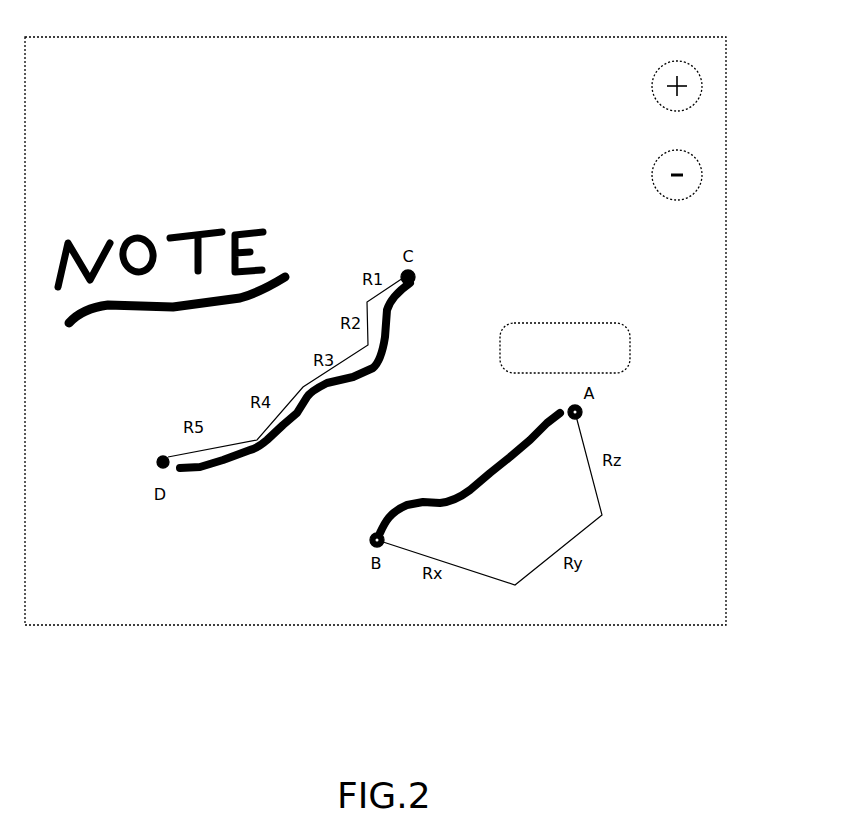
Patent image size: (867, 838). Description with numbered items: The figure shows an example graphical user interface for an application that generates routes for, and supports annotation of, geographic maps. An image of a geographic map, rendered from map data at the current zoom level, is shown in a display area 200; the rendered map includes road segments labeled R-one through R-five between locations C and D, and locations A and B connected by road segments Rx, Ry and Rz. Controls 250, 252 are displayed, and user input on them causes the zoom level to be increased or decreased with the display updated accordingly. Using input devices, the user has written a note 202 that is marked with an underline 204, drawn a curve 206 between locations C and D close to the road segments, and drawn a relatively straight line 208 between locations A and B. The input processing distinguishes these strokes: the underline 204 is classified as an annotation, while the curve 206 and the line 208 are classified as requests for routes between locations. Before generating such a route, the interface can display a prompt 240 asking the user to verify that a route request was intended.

The display area 200 is at (418, 37).
The note 202 is at (250, 220).
The underline 204 is at (272, 263).
The curve 206 is at (393, 312).
The line 208 is at (505, 443).
The prompt 240 is at (590, 323).
The control 250 is at (702, 76).
The control 252 is at (702, 164).